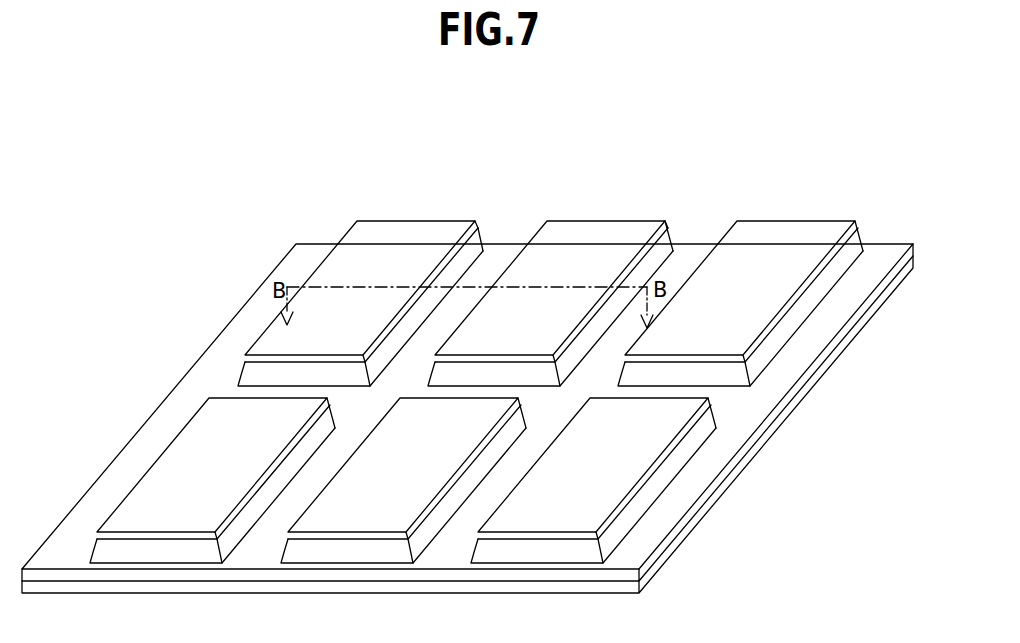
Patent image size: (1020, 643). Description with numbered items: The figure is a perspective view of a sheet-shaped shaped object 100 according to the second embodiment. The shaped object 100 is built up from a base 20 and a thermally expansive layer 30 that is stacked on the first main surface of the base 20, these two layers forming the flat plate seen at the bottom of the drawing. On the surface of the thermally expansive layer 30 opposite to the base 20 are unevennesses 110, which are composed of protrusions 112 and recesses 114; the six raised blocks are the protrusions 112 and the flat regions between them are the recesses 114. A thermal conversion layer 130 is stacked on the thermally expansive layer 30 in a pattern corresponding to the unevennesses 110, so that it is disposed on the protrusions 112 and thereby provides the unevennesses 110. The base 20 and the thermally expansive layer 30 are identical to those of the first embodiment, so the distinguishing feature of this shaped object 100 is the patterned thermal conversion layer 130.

The shaped object 100 is at (748, 160).
The unevennesses 110 is at (395, 250).
The protrusions 112 is at (370, 273).
The recesses 114 is at (508, 257).
The thermal conversion layer 130 is at (673, 243).
The base 20 is at (753, 458).
The thermally expansive layer 30 is at (845, 332).